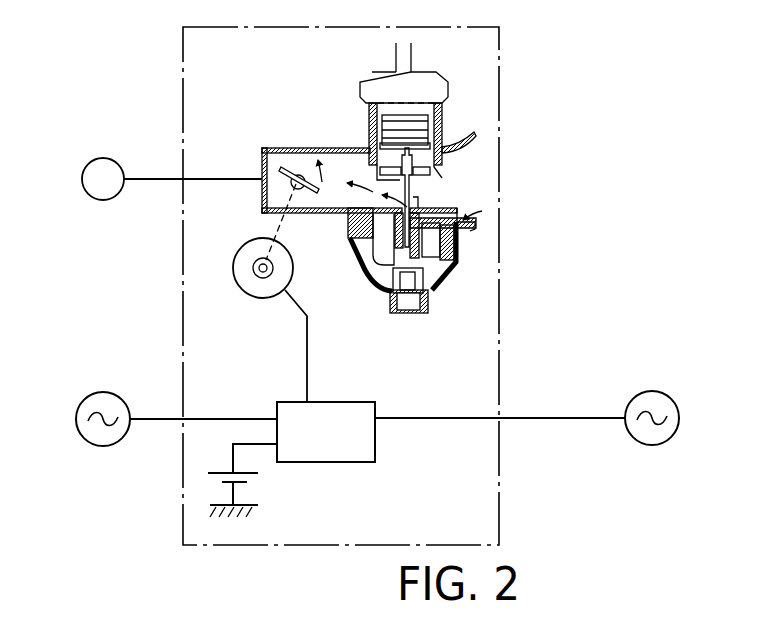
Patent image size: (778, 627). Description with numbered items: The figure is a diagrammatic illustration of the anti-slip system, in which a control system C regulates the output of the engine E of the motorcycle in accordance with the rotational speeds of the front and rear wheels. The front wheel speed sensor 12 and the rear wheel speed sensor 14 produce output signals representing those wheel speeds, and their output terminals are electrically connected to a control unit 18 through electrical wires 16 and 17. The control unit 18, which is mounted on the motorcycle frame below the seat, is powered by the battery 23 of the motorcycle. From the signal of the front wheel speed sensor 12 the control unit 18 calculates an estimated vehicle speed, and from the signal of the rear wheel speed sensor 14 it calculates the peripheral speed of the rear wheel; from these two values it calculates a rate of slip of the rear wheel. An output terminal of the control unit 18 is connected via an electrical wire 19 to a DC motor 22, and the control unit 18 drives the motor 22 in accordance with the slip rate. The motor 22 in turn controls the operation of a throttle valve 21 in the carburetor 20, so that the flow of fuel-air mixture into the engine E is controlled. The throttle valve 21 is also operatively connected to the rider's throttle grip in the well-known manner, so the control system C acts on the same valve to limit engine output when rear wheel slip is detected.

The front wheel speed sensor 12 is at (112, 393).
The rear wheel speed sensor 14 is at (651, 391).
The electrical wire 16 is at (219, 417).
The electrical wire 17 is at (557, 416).
The control unit 18 is at (353, 402).
The electrical wire 19 is at (308, 345).
The carburetor 20 is at (337, 147).
The throttle valve 21 is at (290, 165).
The DC motor 22 is at (250, 293).
The battery 23 is at (262, 478).
The control system C is at (498, 125).
The engine E is at (104, 158).